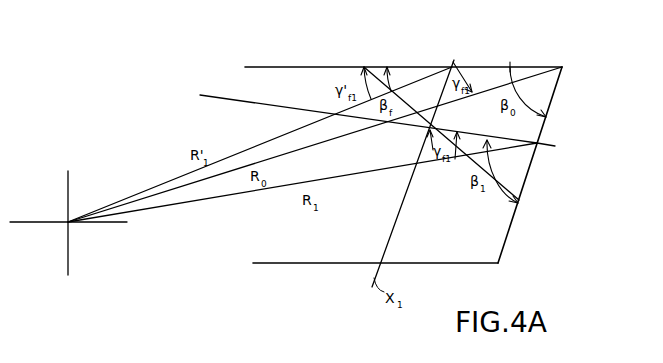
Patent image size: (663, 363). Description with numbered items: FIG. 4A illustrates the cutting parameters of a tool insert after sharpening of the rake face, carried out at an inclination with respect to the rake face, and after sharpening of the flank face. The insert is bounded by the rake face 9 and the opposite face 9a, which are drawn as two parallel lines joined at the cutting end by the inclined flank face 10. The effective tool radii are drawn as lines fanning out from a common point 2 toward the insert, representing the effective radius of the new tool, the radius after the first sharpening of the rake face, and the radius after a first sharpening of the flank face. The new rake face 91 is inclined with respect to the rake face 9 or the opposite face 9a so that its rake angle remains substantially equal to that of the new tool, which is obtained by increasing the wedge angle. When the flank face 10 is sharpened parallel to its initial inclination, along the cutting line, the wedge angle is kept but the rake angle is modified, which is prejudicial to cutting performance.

The light source / origin point 2 is at (67, 227).
The rake face 9 is at (336, 66).
The opposite face 9a is at (285, 264).
The flank face 10 is at (524, 183).
The new rake face 91 is at (554, 146).